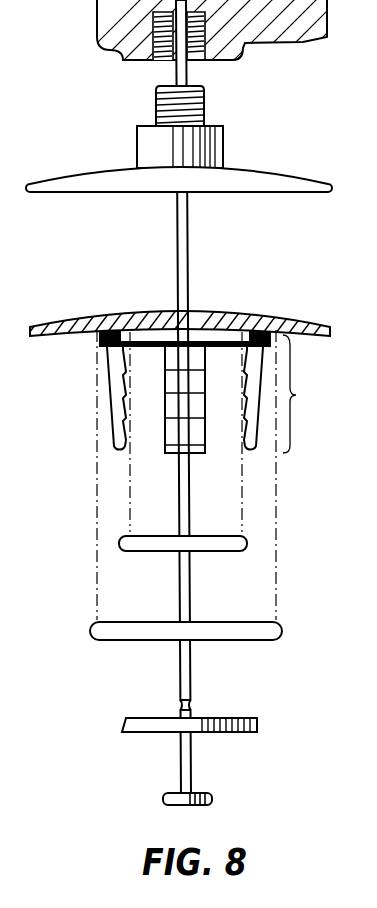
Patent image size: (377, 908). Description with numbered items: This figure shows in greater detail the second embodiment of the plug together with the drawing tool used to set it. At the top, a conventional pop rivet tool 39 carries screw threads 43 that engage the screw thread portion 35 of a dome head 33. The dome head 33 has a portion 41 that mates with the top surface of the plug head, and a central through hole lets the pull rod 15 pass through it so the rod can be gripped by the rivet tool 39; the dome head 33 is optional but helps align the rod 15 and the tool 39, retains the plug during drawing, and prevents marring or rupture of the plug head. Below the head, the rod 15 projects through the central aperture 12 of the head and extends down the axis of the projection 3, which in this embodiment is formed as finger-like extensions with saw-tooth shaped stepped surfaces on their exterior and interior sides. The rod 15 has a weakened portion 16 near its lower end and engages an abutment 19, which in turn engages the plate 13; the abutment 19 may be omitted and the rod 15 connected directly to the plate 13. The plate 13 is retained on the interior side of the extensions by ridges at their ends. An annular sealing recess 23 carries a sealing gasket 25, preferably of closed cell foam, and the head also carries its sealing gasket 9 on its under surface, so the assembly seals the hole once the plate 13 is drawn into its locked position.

The rivet tool 39 is at (298, 17).
The screw threads 43 is at (192, 42).
The screw thread portion 35 is at (168, 98).
The dome head 33 is at (214, 146).
The mating portion 41 is at (268, 178).
The central aperture 12 is at (207, 318).
The annular sealing recess 23 is at (137, 333).
The projection 3 is at (296, 395).
The sealing gasket 25 is at (245, 541).
The rod 15 is at (192, 598).
The sealing gasket 9 is at (282, 631).
The weakened portion 16 is at (189, 703).
The plate 13 is at (257, 722).
The abutment 19 is at (212, 798).